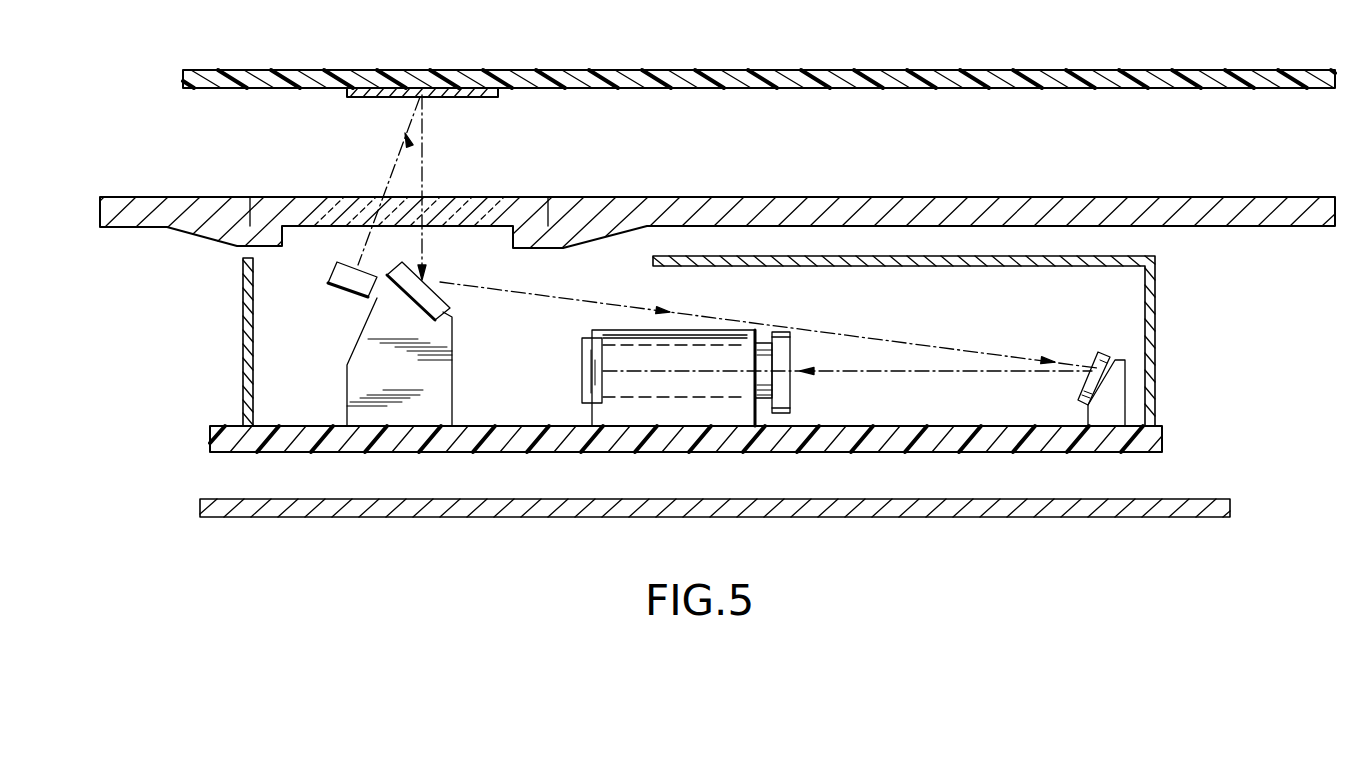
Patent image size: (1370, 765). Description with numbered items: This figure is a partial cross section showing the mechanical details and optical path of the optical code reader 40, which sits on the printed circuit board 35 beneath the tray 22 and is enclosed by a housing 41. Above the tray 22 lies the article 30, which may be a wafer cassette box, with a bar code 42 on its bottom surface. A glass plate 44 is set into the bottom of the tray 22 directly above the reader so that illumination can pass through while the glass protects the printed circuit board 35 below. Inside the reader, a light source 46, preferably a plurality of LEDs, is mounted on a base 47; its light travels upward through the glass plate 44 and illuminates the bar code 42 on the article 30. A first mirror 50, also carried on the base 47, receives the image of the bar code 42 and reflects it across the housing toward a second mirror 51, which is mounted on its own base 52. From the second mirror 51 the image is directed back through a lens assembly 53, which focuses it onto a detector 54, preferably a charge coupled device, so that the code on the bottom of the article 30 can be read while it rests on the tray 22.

The tray 22 is at (760, 197).
The article 30 is at (730, 68).
The printed circuit board 35 is at (637, 452).
The optical code reader 40 is at (532, 375).
The housing 41 is at (1156, 321).
The bar code 42 is at (496, 98).
The glass plate 44 is at (337, 172).
The light source 46 is at (343, 295).
The base 47 is at (358, 380).
The first mirror 50 is at (449, 307).
The second mirror 51 is at (1103, 352).
The base 52 is at (1126, 385).
The lens assembly 53 is at (790, 390).
The detector 54 is at (582, 395).